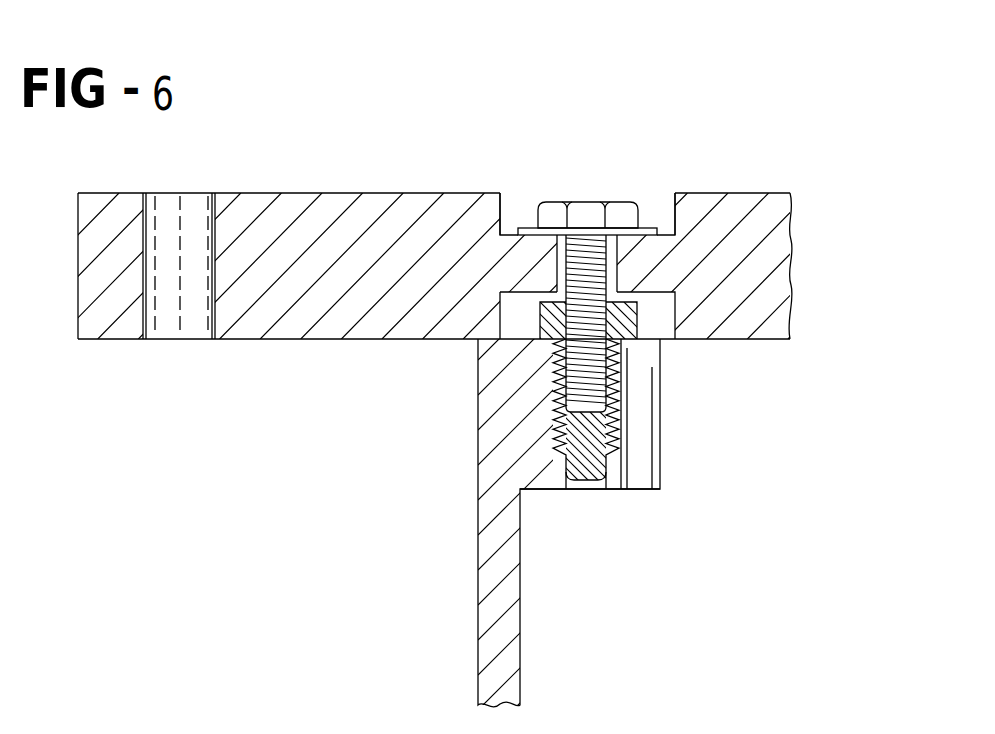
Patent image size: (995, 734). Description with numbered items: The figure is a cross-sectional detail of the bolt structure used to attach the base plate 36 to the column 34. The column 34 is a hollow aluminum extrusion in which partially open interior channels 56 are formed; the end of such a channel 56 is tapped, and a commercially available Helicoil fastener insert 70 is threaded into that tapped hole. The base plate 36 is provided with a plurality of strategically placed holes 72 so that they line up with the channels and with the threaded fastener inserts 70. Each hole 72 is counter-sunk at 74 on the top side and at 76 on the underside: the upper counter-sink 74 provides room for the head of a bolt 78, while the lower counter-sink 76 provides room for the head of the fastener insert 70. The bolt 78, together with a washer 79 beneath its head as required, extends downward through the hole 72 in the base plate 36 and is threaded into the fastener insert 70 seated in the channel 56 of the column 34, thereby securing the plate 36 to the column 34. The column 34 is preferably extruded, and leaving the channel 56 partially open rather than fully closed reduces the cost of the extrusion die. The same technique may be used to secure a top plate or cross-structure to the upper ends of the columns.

The base plate 36 is at (373, 192).
The column 34 is at (477, 455).
The fastener insert 70 is at (617, 412).
The hole 72 is at (613, 278).
The bolt 78 is at (583, 193).
The washer 79 is at (532, 192).
The counter-sink 74 is at (661, 193).
The counter-sink 76 is at (670, 320).
The interior channel 56 is at (603, 489).